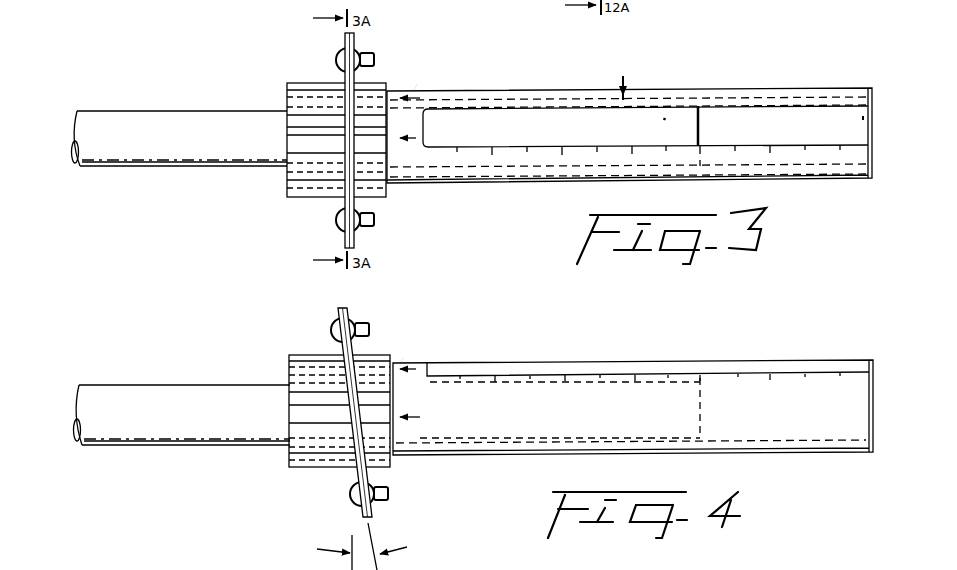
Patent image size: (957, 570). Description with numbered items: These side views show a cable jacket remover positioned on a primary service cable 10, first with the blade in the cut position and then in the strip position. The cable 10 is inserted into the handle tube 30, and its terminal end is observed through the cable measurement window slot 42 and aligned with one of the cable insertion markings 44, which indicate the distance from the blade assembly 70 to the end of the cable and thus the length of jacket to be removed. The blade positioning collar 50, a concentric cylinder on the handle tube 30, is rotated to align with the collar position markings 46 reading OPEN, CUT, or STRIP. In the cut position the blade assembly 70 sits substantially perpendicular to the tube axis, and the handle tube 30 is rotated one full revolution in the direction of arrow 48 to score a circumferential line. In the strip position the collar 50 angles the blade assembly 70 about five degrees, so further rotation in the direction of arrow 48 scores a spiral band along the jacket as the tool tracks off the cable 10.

In FIG. 3, the cable 10 is at (160, 118).
In FIG. 4, the cable 10 is at (162, 392).
In FIG. 3, the handle tube 30 is at (858, 88).
In FIG. 4, the handle tube 30 is at (850, 365).
In FIG. 3, the cable measurement window slot 42 is at (866, 118).
In FIG. 3, the cable insertion markings 44 is at (704, 164).
In FIG. 3, the collar position markings 46 is at (419, 84).
In FIG. 4, the collar position markings 46 is at (405, 360).
In FIG. 3, the arrow 48 is at (622, 88).
In FIG. 3, the blade positioning collar 50 is at (300, 194).
In FIG. 4, the blade positioning collar 50 is at (300, 467).
In FIG. 3, the blade assembly 70 is at (358, 190).
In FIG. 4, the blade assembly 70 is at (381, 470).